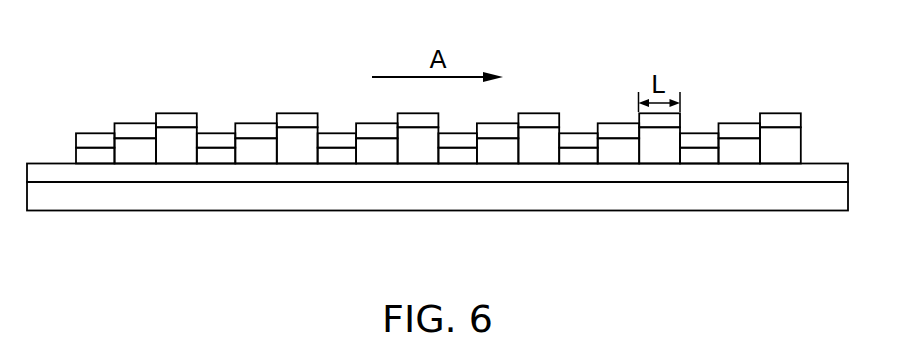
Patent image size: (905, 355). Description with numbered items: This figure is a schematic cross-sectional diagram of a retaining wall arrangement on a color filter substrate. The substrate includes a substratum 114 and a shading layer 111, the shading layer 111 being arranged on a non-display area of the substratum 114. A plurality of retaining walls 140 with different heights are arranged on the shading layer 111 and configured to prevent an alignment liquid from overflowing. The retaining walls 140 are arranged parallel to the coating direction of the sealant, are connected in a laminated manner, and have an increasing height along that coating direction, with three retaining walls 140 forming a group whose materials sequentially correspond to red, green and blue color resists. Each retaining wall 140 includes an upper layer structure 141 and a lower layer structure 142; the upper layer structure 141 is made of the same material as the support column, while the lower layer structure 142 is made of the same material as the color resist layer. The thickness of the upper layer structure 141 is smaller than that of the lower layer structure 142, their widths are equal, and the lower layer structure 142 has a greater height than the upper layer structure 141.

The shading layer 111 is at (323, 170).
The substratum 114 is at (218, 193).
The retaining walls 140 is at (433, 84).
The upper layer structure 141 is at (137, 129).
The lower layer structure 142 is at (198, 50).